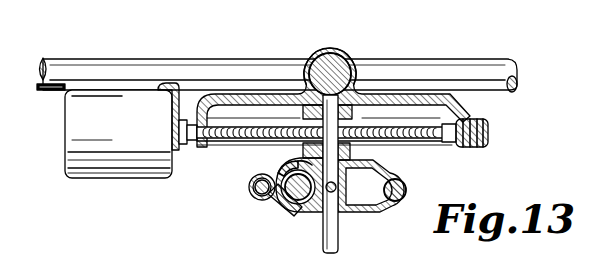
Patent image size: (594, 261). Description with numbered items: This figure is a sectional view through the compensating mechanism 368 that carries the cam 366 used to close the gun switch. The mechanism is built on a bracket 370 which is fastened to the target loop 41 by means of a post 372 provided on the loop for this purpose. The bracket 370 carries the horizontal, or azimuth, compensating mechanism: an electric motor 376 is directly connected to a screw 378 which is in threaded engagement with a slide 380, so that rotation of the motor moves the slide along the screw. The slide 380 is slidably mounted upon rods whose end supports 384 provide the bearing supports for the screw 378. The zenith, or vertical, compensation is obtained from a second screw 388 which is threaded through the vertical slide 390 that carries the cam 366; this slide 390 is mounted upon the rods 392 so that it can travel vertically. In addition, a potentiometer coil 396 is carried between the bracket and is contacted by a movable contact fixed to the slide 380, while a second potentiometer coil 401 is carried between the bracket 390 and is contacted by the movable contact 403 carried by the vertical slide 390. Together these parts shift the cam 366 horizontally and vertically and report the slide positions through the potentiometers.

The target loop 41 is at (484, 68).
The cam 366 is at (334, 240).
The compensating mechanism 368 is at (230, 190).
The bracket 370 is at (323, 58).
The post 372 is at (336, 57).
The electric motor 376 is at (158, 175).
The screw 378 is at (405, 146).
The slide 380 is at (362, 109).
The end supports 384 is at (470, 120).
The screw 388 is at (338, 188).
The vertical slide 390 is at (308, 214).
The rods 392 is at (253, 197).
The potentiometer coil 396 is at (405, 150).
The potentiometer coil 401 is at (278, 210).
The movable contact 403 is at (276, 172).